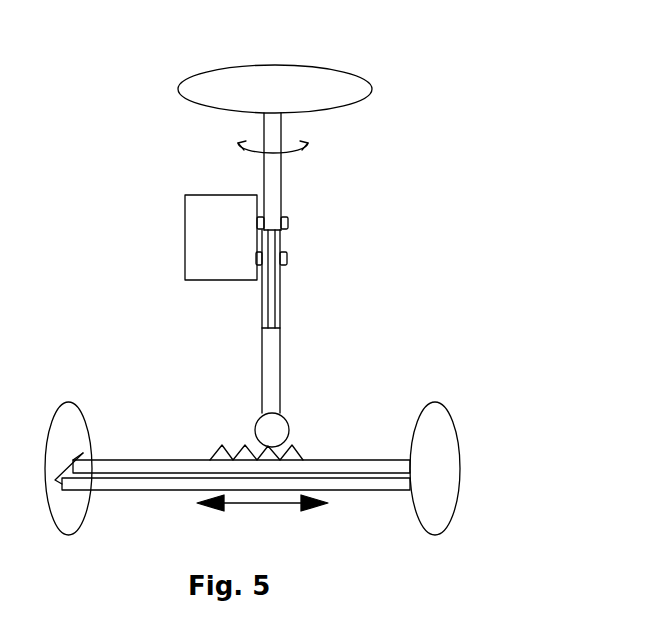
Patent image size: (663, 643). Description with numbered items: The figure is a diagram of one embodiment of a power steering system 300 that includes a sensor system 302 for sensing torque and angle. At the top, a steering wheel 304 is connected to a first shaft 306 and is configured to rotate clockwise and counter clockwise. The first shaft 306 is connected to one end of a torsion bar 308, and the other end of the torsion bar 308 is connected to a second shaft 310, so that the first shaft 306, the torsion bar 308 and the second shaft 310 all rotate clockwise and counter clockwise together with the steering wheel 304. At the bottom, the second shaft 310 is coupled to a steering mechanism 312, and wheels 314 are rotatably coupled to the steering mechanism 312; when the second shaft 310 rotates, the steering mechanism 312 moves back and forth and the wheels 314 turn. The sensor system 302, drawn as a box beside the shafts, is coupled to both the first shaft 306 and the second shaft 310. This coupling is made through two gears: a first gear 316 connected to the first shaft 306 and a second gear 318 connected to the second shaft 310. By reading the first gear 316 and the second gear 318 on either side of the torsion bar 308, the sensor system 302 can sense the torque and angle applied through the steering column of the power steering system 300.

The power steering system 300 is at (415, 80).
The sensor system 302 is at (185, 242).
The steering wheel 304 is at (300, 78).
The first shaft 306 is at (272, 186).
The torsion bar 308 is at (270, 234).
The second shaft 310 is at (280, 388).
The steering mechanism 312 is at (323, 433).
The wheels 314 is at (72, 424).
The first gear 316 is at (288, 225).
The second gear 318 is at (287, 258).